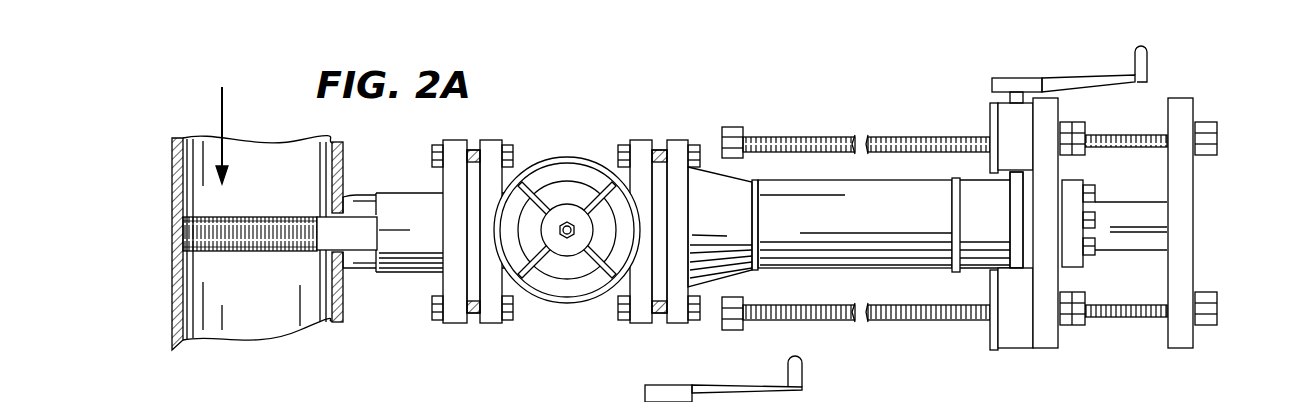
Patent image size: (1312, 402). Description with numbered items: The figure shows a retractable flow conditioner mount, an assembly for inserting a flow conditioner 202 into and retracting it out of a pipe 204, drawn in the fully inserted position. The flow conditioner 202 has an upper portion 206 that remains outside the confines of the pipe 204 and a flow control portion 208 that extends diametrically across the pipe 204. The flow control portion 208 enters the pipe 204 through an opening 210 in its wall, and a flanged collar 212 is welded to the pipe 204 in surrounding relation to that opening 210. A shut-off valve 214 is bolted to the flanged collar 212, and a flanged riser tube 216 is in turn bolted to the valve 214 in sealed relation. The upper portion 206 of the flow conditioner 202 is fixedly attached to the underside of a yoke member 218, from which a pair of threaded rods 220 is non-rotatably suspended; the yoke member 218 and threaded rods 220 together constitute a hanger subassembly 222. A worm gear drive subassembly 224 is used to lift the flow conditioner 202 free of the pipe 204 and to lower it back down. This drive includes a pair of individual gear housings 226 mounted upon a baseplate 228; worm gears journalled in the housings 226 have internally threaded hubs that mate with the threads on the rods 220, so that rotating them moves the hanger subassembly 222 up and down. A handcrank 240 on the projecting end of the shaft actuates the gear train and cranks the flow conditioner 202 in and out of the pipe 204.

The flow conditioner 202 is at (316, 212).
The pipe 204 is at (170, 332).
The upper portion 206 is at (1152, 223).
The flow control portion 208 is at (207, 255).
The opening 210 is at (348, 255).
The flanged collar 212 is at (418, 207).
The shut-off valve 214 is at (563, 197).
The flanged riser tube 216 is at (910, 257).
The yoke member 218 is at (1180, 337).
The threaded rods 220 is at (825, 132).
The hanger subassembly 222 is at (1220, 264).
The worm gear drive subassembly 224 is at (962, 118).
The gear housings 226 is at (1017, 136).
The baseplate 228 is at (1042, 117).
The handcrank 240 is at (1038, 77).